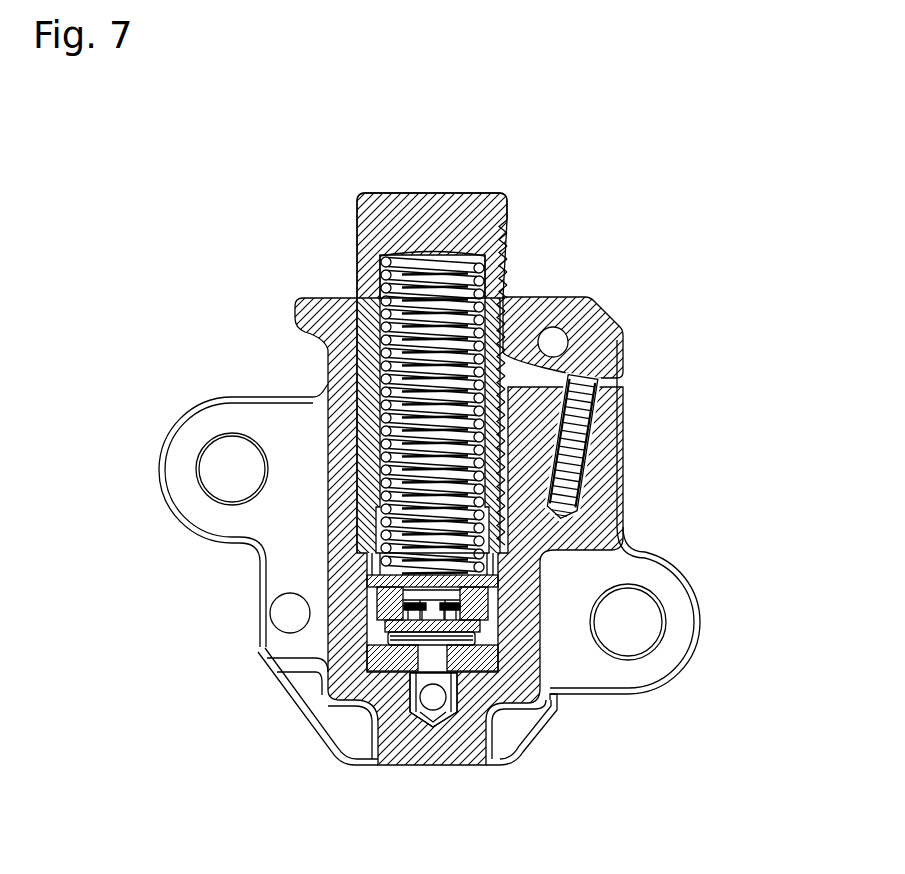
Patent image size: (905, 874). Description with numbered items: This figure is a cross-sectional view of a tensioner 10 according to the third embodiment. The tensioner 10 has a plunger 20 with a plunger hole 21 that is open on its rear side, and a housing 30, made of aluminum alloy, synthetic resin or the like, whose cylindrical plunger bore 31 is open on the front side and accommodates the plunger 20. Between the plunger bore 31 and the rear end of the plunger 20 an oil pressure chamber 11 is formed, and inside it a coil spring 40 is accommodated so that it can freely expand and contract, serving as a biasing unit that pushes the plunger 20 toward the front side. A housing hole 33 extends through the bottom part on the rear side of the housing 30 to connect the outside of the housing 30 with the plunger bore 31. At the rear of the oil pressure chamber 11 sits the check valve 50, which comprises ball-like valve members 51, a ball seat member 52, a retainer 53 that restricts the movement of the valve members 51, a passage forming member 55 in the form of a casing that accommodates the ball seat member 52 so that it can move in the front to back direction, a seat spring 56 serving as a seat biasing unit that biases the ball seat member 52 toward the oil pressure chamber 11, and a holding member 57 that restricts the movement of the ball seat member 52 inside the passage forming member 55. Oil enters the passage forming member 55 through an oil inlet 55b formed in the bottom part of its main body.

The tensioner 10 is at (258, 132).
The oil pressure chamber 11 is at (448, 426).
The plunger 20 is at (430, 215).
The plunger hole 21 is at (355, 277).
The housing 30 is at (610, 365).
The plunger bore 31 is at (325, 343).
The housing hole 33 is at (432, 702).
The coil spring 40 is at (493, 272).
The check valve 50 is at (619, 595).
The valve members 51 is at (405, 620).
The ball seat member 52 is at (440, 626).
The retainer 53 is at (448, 598).
The passage forming member 55 is at (455, 660).
The oil inlet 55b is at (343, 700).
The seat spring 56 is at (440, 640).
The holding member 57 is at (462, 575).